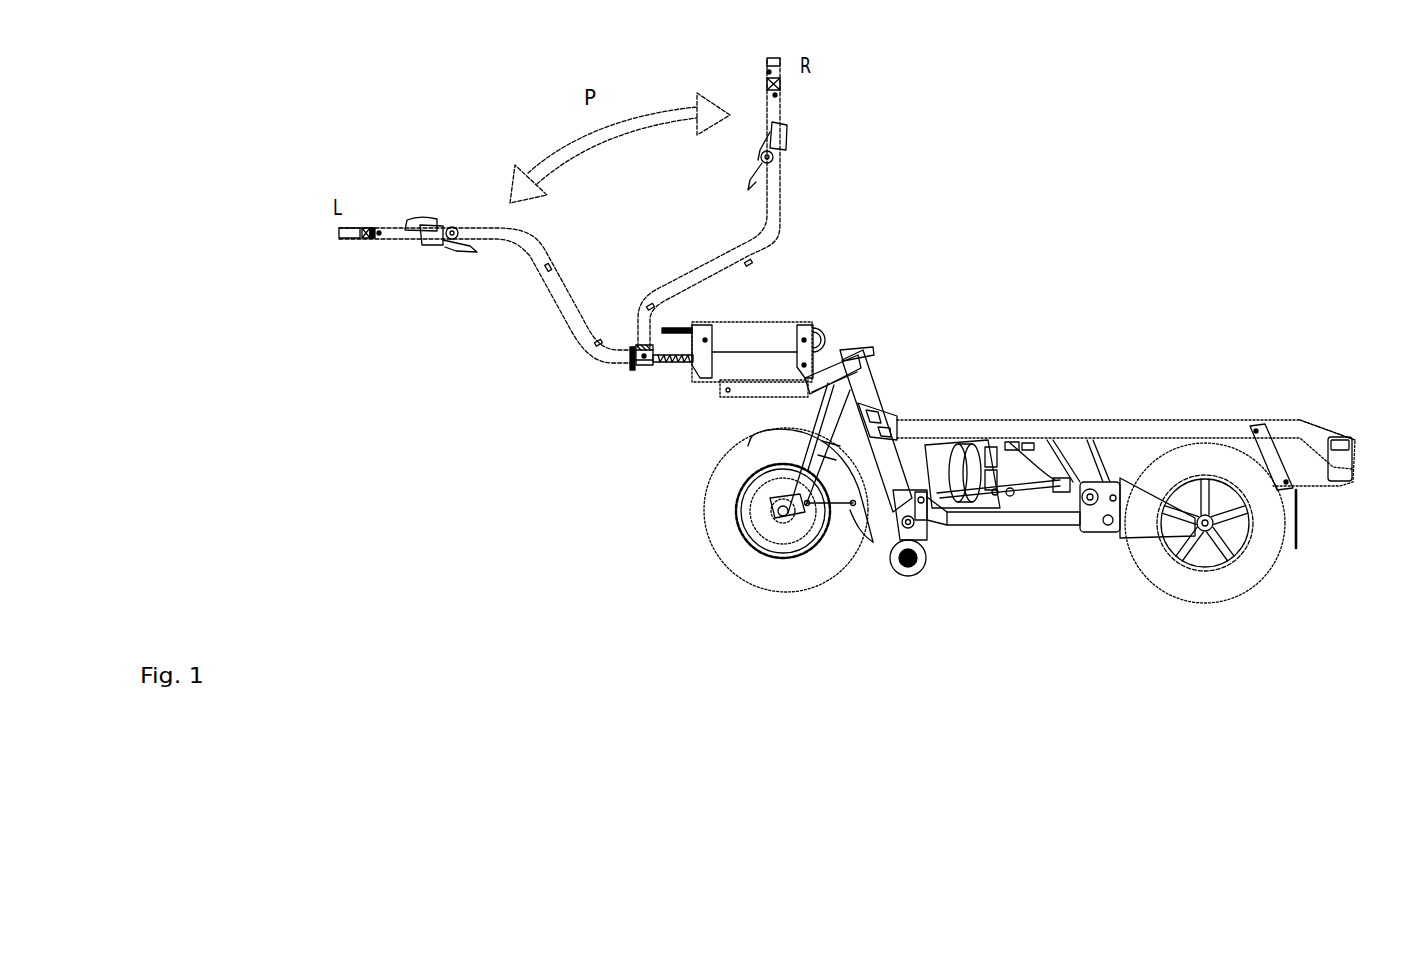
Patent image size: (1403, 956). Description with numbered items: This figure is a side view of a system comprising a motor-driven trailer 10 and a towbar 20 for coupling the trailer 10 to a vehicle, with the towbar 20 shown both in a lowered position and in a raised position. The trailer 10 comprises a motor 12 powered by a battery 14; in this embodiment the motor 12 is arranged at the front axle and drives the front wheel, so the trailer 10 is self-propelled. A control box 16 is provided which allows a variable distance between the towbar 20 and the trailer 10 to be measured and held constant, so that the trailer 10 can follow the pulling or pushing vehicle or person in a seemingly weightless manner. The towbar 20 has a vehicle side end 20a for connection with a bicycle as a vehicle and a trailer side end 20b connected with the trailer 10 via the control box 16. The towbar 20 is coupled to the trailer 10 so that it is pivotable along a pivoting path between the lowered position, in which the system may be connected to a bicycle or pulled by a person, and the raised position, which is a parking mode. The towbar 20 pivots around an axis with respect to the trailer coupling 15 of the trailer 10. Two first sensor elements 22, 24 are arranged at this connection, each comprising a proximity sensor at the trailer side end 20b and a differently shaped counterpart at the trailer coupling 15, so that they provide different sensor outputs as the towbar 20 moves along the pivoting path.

The motor-driven trailer 10 is at (1157, 293).
The motor 12 is at (765, 525).
The battery 14 is at (977, 460).
The trailer coupling 15 is at (654, 365).
The control box 16 is at (778, 343).
The towbar 20 is at (427, 305).
The vehicle side end 20a is at (357, 238).
The trailer side end 20b is at (631, 370).
The first sensor element 22 is at (623, 333).
The first sensor element 24 is at (643, 351).